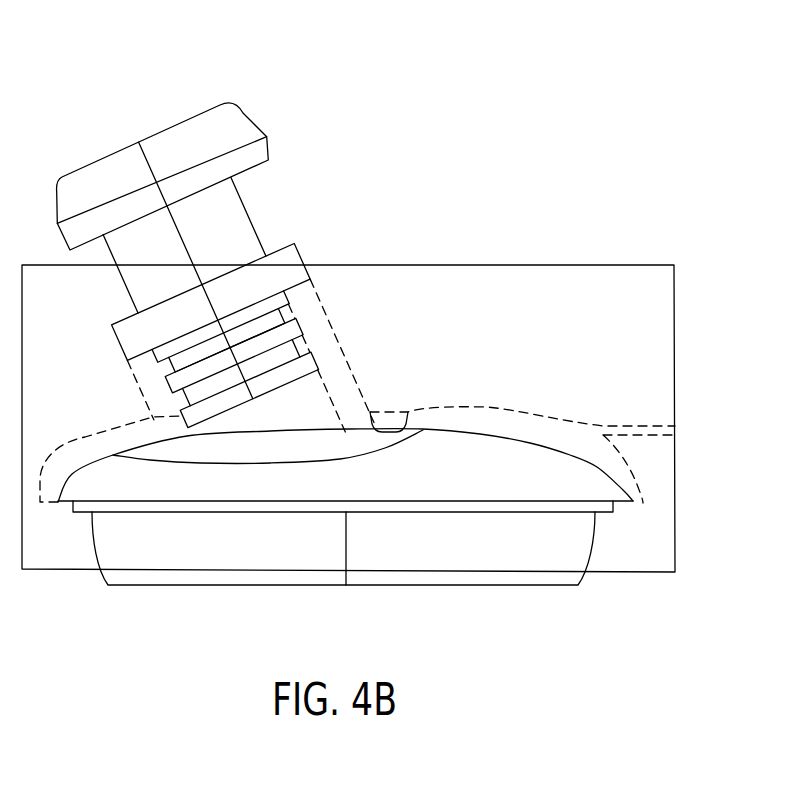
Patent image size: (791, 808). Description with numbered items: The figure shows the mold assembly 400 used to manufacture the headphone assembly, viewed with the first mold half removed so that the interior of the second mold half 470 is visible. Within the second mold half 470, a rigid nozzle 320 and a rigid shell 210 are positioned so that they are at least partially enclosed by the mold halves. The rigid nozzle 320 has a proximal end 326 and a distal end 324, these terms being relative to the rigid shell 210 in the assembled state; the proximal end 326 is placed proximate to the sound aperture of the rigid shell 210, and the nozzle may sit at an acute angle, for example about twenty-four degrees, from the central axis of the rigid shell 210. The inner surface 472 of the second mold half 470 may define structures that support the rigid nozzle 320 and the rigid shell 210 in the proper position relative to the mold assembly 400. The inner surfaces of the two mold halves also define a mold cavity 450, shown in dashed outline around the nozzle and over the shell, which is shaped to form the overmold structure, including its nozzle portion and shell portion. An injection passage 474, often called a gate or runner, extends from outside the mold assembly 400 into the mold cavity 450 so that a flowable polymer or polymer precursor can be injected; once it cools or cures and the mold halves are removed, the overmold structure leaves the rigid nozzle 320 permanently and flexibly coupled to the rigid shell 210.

The mold assembly 400 is at (514, 84).
The distal end 324 is at (214, 106).
The rigid nozzle 320 is at (247, 207).
The proximal end 326 is at (310, 360).
The mold cavity 450 is at (118, 432).
The second mold half 470 is at (557, 265).
The inner surface 472 is at (465, 325).
The injection passage 474 is at (620, 426).
The rigid shell 210 is at (586, 579).